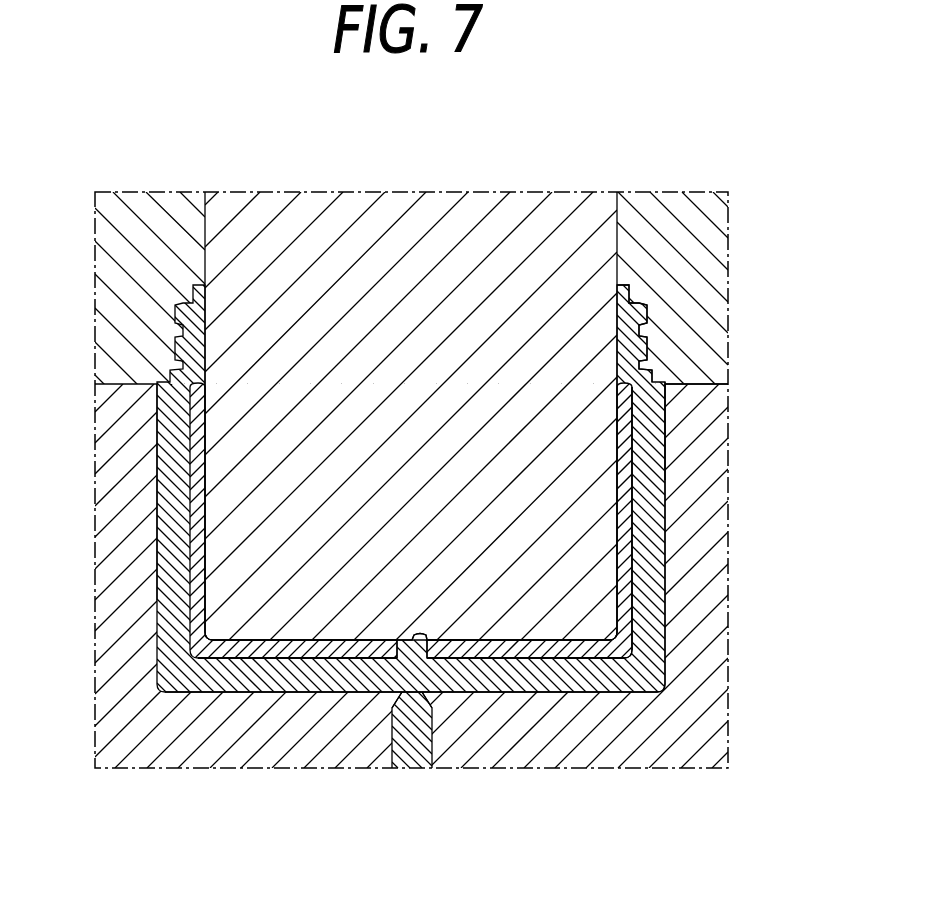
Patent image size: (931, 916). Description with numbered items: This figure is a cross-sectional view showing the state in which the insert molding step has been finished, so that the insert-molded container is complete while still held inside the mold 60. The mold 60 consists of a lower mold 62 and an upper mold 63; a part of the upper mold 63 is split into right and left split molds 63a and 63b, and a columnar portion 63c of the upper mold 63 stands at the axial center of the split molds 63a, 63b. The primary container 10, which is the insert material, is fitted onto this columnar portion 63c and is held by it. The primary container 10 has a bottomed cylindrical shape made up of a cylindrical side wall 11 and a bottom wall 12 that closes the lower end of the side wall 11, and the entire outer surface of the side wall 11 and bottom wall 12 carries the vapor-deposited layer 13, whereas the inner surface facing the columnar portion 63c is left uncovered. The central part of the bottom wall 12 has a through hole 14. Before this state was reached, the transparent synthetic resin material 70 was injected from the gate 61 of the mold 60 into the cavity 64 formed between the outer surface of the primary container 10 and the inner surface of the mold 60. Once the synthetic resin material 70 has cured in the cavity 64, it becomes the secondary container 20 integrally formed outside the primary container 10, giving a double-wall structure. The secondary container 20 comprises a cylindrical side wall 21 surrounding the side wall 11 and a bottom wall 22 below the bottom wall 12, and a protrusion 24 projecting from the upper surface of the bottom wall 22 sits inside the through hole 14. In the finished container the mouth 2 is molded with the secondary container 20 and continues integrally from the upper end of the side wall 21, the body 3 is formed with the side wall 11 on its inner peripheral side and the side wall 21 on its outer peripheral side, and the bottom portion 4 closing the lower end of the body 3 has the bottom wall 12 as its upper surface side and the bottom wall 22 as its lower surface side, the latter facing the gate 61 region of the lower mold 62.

The mouth 2 is at (646, 320).
The body 3 is at (670, 428).
The bottom portion 4 is at (469, 550).
The primary container 10 is at (639, 523).
The side wall 11 is at (627, 502).
The bottom wall 12 is at (502, 650).
The vapor-deposited layer 13 is at (637, 577).
The through hole 14 is at (425, 637).
The secondary container 20 is at (664, 633).
The side wall 21 is at (650, 607).
The bottom wall 22 is at (595, 675).
The protrusion 24 is at (405, 636).
The mold 60 is at (730, 440).
The gate 61 is at (404, 693).
The lower mold 62 is at (434, 602).
The upper mold 63 is at (455, 443).
The split mold 63a is at (668, 223).
The split mold 63b is at (149, 215).
The columnar portion 63c is at (405, 223).
The cavity 64 is at (158, 522).
The synthetic resin material 70 is at (414, 752).